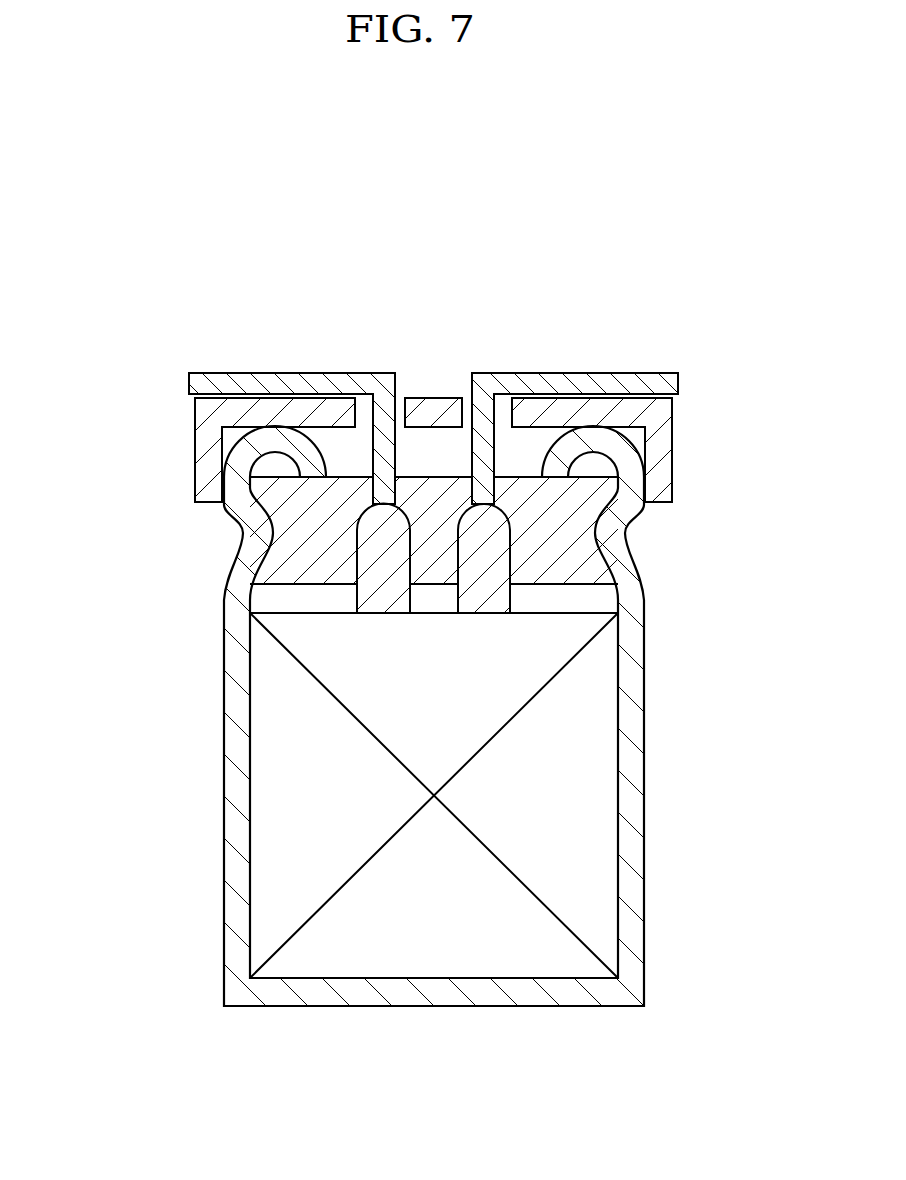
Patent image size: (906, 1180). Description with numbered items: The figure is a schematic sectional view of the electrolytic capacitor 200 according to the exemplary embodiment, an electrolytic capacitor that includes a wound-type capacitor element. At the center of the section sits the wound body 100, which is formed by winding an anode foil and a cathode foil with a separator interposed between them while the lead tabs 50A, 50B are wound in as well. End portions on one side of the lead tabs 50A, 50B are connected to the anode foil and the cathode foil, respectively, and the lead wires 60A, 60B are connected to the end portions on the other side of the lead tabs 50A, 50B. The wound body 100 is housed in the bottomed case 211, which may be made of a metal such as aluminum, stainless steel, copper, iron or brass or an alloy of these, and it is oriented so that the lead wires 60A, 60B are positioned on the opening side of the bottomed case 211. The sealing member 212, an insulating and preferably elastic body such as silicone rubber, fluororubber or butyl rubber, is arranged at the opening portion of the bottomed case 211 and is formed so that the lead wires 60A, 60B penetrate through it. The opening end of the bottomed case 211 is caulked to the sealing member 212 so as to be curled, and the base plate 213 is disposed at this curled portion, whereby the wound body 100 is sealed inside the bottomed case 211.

The electrolytic capacitor 200 is at (539, 240).
The bottomed case 211 is at (238, 905).
The sealing member 212 is at (553, 533).
The base plate 213 is at (207, 450).
The wound body 100 is at (298, 745).
The lead tab 50A is at (368, 522).
The lead tab 50B is at (488, 580).
The lead wire 60A is at (300, 374).
The lead wire 60B is at (585, 374).